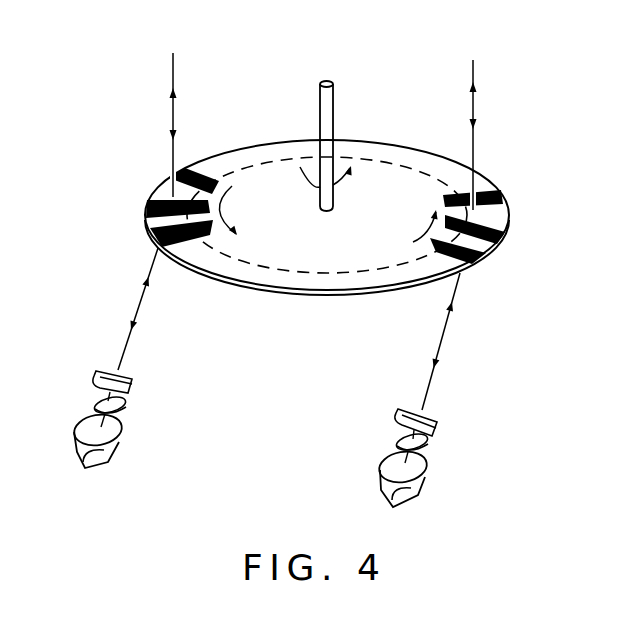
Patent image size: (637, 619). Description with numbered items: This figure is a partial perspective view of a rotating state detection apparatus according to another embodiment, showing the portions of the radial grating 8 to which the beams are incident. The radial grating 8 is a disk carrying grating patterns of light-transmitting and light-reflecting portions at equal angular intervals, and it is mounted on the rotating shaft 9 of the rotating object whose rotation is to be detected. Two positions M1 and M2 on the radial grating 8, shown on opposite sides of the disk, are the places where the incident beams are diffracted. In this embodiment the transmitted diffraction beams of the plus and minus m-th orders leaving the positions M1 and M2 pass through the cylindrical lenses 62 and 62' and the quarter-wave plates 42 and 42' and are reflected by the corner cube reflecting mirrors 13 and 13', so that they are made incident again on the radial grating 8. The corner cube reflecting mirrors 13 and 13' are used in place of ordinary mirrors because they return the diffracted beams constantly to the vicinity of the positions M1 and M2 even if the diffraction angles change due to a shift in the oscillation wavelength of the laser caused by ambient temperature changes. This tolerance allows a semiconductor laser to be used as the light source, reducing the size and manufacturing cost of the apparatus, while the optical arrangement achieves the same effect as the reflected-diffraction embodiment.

The radial grating 8 is at (337, 282).
The rotating shaft 9 is at (334, 113).
The position on the radial grating M1 is at (507, 211).
The position on the radial grating M2 is at (170, 193).
The cylindrical lens 62 is at (448, 420).
The λ/4 plate 42 is at (444, 450).
The corner cube reflecting mirror 13 is at (429, 486).
The cylindrical lens 62' is at (144, 385).
The λ/4 plate 42' is at (143, 418).
The corner cube reflecting mirror 13' is at (118, 457).